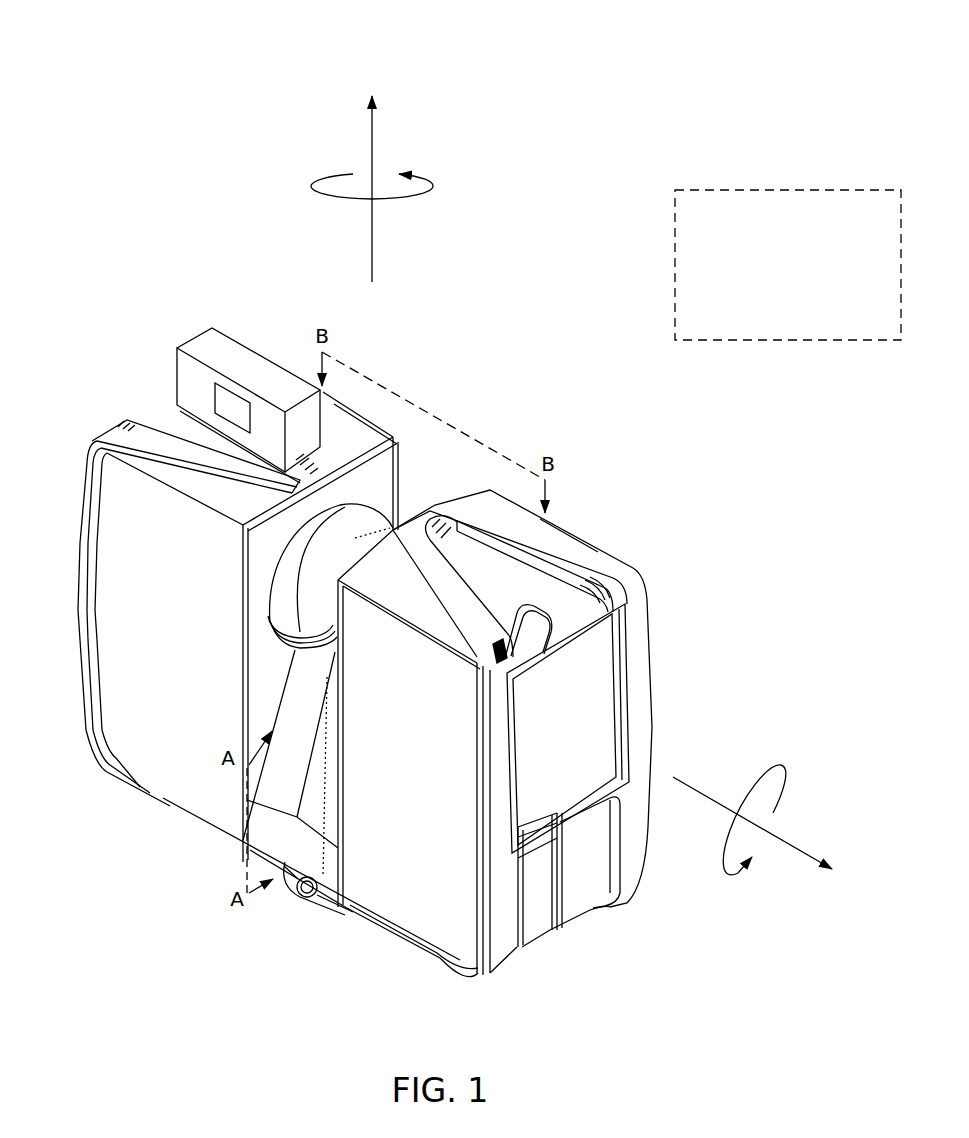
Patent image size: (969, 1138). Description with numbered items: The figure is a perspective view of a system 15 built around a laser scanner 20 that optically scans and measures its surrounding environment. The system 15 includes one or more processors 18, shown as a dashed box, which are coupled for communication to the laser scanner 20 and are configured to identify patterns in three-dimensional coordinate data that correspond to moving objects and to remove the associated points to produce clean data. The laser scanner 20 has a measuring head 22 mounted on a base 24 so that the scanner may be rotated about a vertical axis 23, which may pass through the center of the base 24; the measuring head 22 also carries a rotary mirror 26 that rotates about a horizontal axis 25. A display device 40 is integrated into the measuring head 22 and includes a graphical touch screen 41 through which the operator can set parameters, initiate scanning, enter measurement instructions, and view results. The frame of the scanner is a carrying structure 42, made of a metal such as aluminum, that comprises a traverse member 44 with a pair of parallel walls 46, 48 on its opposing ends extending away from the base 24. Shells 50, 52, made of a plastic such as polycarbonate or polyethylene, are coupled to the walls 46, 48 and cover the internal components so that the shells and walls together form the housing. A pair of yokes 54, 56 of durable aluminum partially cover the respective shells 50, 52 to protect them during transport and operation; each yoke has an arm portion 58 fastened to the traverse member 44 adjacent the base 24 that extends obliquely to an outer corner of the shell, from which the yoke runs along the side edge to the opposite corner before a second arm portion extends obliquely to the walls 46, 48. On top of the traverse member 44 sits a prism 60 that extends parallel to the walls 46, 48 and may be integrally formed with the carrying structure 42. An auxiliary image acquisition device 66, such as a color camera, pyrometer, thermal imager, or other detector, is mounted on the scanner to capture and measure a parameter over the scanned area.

The system 15 is at (741, 125).
The one or more processors 18 is at (848, 344).
The laser scanner 20 is at (203, 209).
The measuring head 22 is at (614, 437).
The vertical axis 23 is at (375, 153).
The base 24 is at (307, 897).
The horizontal axis 25 is at (807, 841).
The rotary mirror 26 is at (567, 528).
The display device 40 is at (673, 701).
The graphical touch screen 41 is at (587, 672).
The carrying structure 42 is at (192, 920).
The traverse member 44 is at (323, 893).
The wall 46 is at (470, 495).
The wall 48 is at (379, 474).
The shell 50 is at (126, 660).
The shell 52 is at (460, 903).
The yoke 54 is at (603, 557).
The yoke 56 is at (140, 433).
The arm portion 58 is at (110, 781).
The prism 60 is at (350, 903).
The auxiliary image acquisition device 66 is at (190, 342).